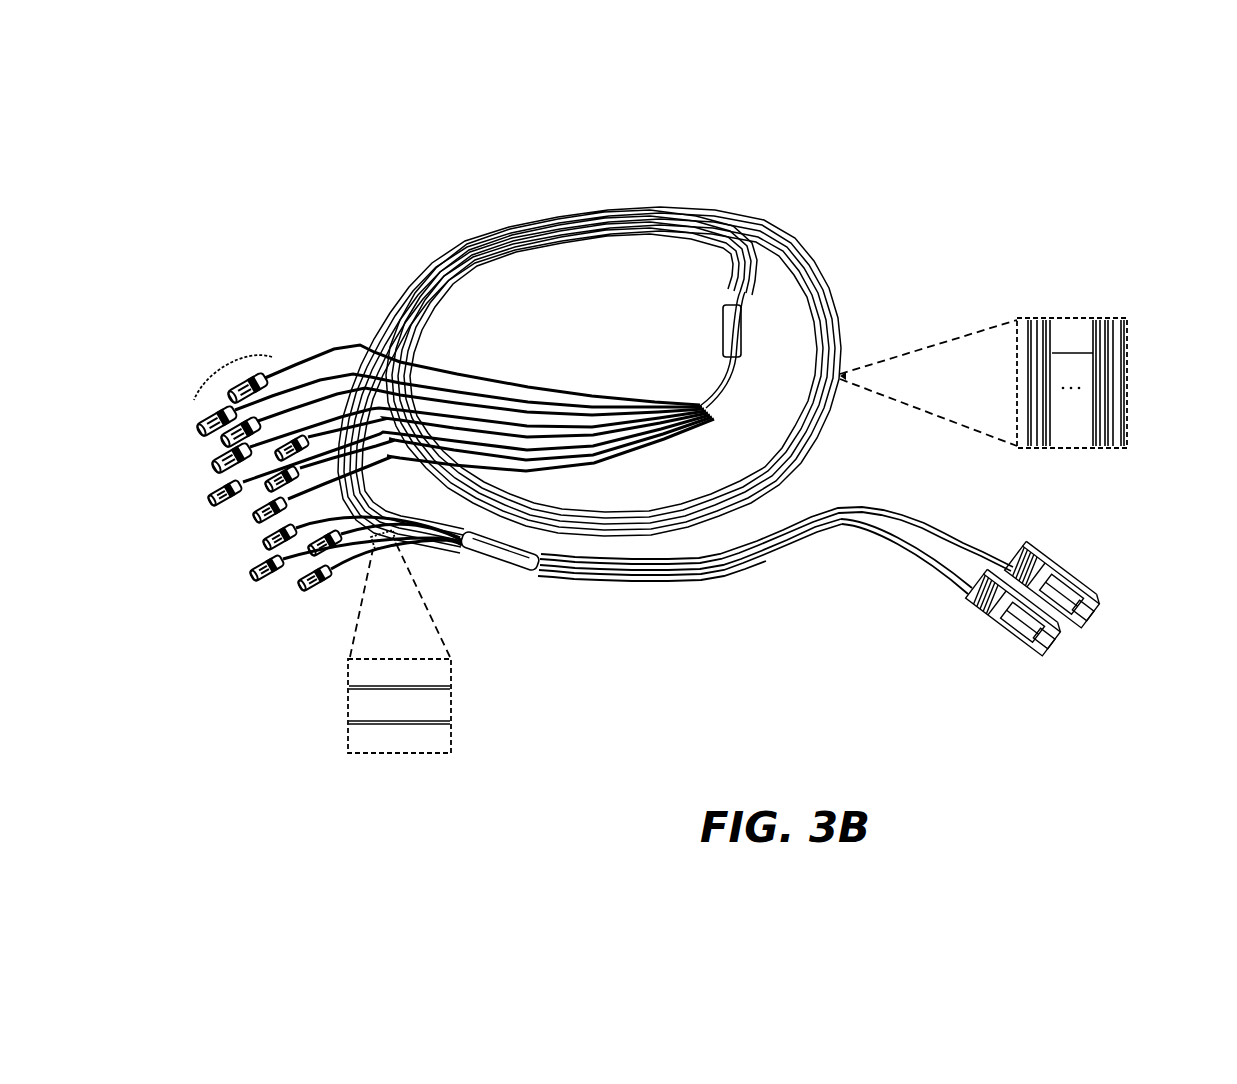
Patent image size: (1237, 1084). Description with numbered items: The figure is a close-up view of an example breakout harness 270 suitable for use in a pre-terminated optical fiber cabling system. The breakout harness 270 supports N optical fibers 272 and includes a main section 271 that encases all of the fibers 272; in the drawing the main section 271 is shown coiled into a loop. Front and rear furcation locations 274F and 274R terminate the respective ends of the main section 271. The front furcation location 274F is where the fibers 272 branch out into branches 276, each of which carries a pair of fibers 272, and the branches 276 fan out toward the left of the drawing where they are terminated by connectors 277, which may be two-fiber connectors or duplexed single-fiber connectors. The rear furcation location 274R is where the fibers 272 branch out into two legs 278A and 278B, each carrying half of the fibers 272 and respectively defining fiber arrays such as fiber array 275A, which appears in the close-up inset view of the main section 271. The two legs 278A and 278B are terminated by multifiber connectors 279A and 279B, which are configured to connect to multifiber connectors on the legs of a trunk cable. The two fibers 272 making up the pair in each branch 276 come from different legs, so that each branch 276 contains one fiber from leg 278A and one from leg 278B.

The breakout harness 270 is at (827, 253).
The main section 271 is at (838, 328).
The optical fibers 272 is at (1093, 353).
The front furcation location 274F is at (712, 330).
The rear furcation location 274R is at (527, 576).
The fiber array 275A is at (1043, 313).
The branches 276 is at (352, 374).
The connectors 277 is at (222, 353).
The leg 278A is at (850, 540).
The leg 278B is at (868, 520).
The multifiber connector 279A is at (1008, 625).
The multifiber connector 279B is at (1043, 567).